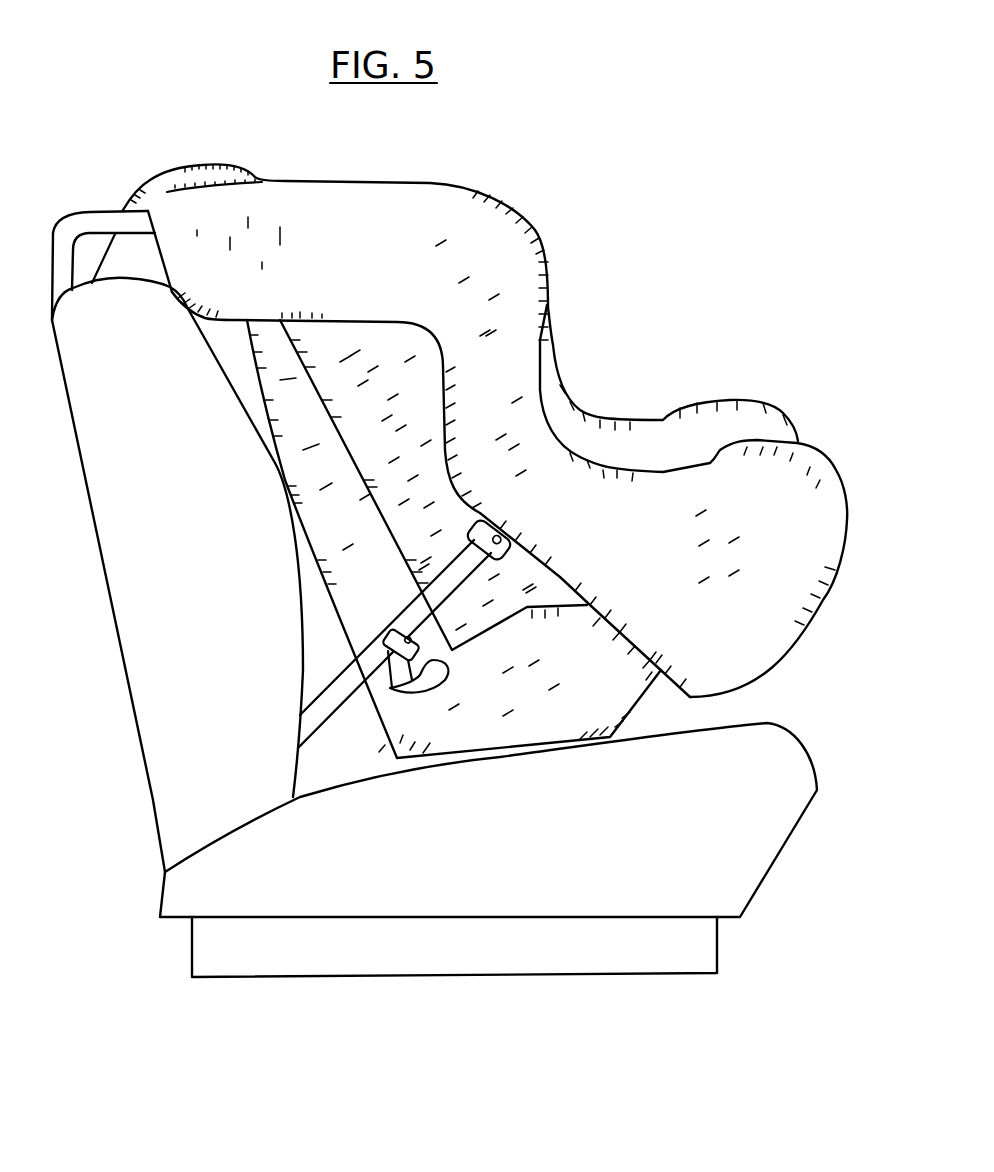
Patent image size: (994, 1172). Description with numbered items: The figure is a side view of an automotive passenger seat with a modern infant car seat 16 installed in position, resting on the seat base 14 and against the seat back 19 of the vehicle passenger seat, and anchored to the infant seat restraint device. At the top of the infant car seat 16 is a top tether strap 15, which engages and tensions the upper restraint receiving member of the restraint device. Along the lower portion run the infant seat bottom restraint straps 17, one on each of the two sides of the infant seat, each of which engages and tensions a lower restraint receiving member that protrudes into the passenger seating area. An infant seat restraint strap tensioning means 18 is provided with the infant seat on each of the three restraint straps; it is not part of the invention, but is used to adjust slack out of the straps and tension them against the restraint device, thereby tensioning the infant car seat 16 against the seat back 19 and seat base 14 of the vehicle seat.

The seat base 14 is at (733, 838).
The top tether strap 15 is at (100, 228).
The infant car seat 16 is at (532, 195).
The infant seat bottom restraint straps 17 is at (333, 697).
The infant seat restraint strap tensioning means 18 is at (385, 636).
The seat back 19 is at (127, 493).